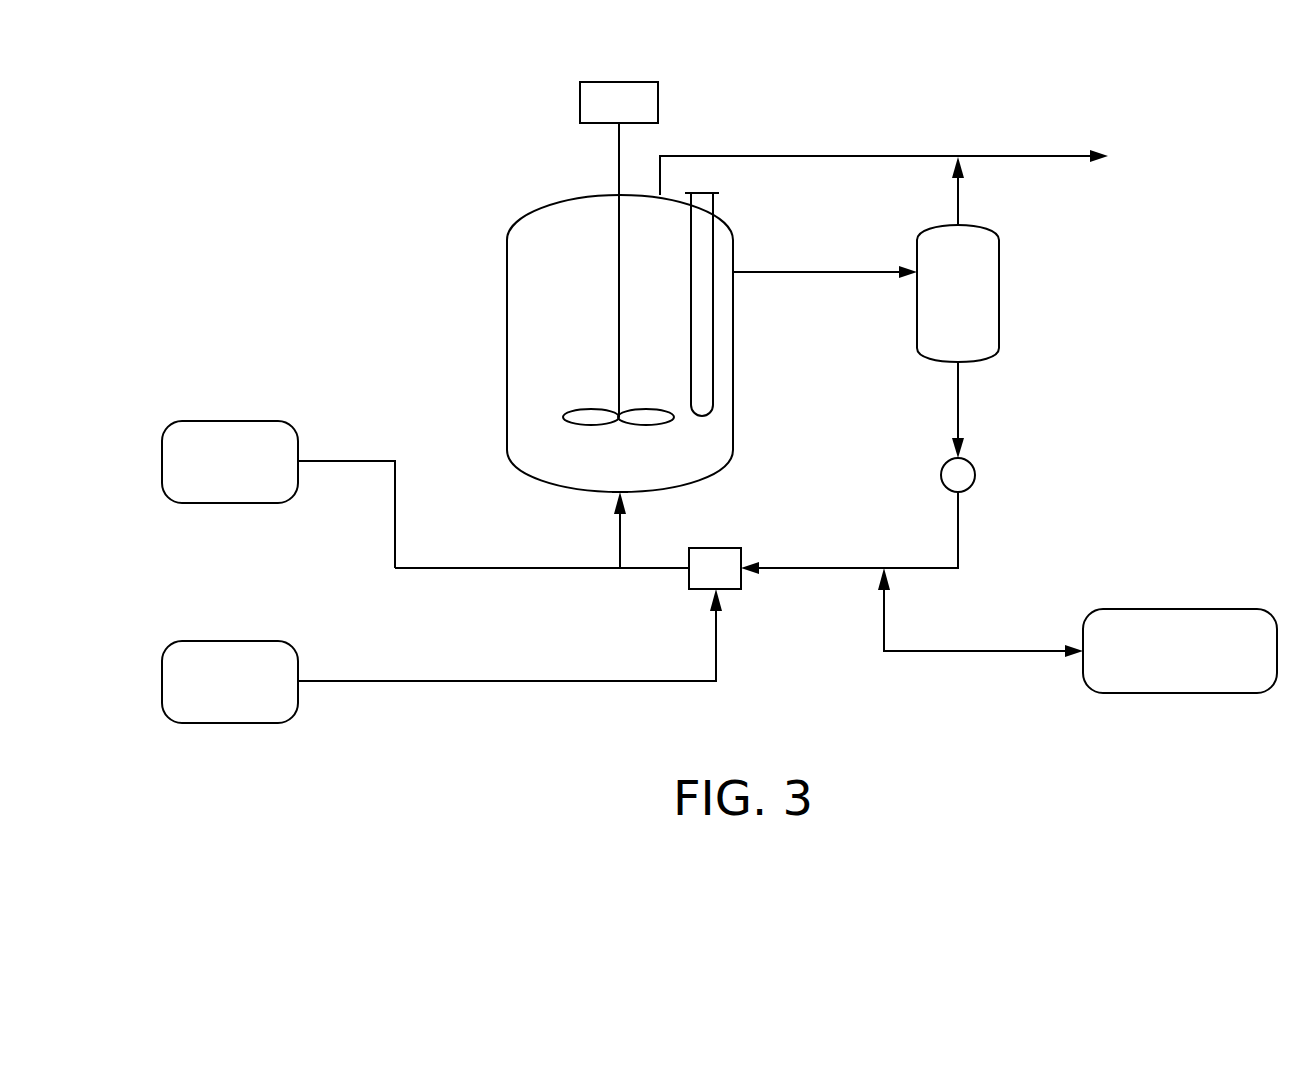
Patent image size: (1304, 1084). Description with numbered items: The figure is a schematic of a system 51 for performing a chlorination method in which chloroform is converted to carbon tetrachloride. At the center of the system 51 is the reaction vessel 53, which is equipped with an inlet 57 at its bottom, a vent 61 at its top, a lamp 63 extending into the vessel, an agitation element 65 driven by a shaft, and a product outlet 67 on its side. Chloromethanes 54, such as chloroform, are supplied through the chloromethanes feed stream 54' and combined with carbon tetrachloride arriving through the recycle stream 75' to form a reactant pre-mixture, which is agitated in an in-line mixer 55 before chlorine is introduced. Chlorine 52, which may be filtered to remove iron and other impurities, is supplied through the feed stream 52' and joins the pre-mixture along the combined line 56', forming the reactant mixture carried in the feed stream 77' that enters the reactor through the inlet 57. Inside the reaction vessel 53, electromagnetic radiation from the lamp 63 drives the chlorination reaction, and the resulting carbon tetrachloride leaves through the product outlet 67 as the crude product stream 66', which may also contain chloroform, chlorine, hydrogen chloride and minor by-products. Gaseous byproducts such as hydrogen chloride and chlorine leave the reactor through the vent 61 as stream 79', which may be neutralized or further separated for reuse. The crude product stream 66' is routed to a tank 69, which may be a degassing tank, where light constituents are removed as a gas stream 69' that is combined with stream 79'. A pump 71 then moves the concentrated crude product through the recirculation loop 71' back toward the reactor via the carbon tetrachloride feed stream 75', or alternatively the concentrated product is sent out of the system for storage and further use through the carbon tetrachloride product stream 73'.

The system 51 is at (380, 193).
The chlorine 52 is at (230, 435).
The feed stream 52' is at (356, 485).
The reaction vessel 53 is at (507, 298).
The chloromethanes 54 is at (230, 657).
The chloromethanes feed stream 54' is at (510, 660).
The in-line mixer 55 is at (709, 548).
The combined feed line 56' is at (542, 594).
The inlet 57 is at (622, 494).
The vent 61 is at (656, 196).
The lamp 63 is at (691, 292).
The agitation element 65 is at (592, 426).
The product stream 66' is at (825, 300).
The product outlet 67 is at (733, 270).
The tank 69 is at (991, 293).
The gas stream 69' is at (995, 191).
The pump 71 is at (986, 427).
The recirculation loop 71' is at (824, 616).
The carbon tetrachloride product stream 73' is at (980, 612).
The recycle stream 75' is at (849, 533).
The feed stream 77' is at (589, 530).
The stream 79' is at (884, 150).